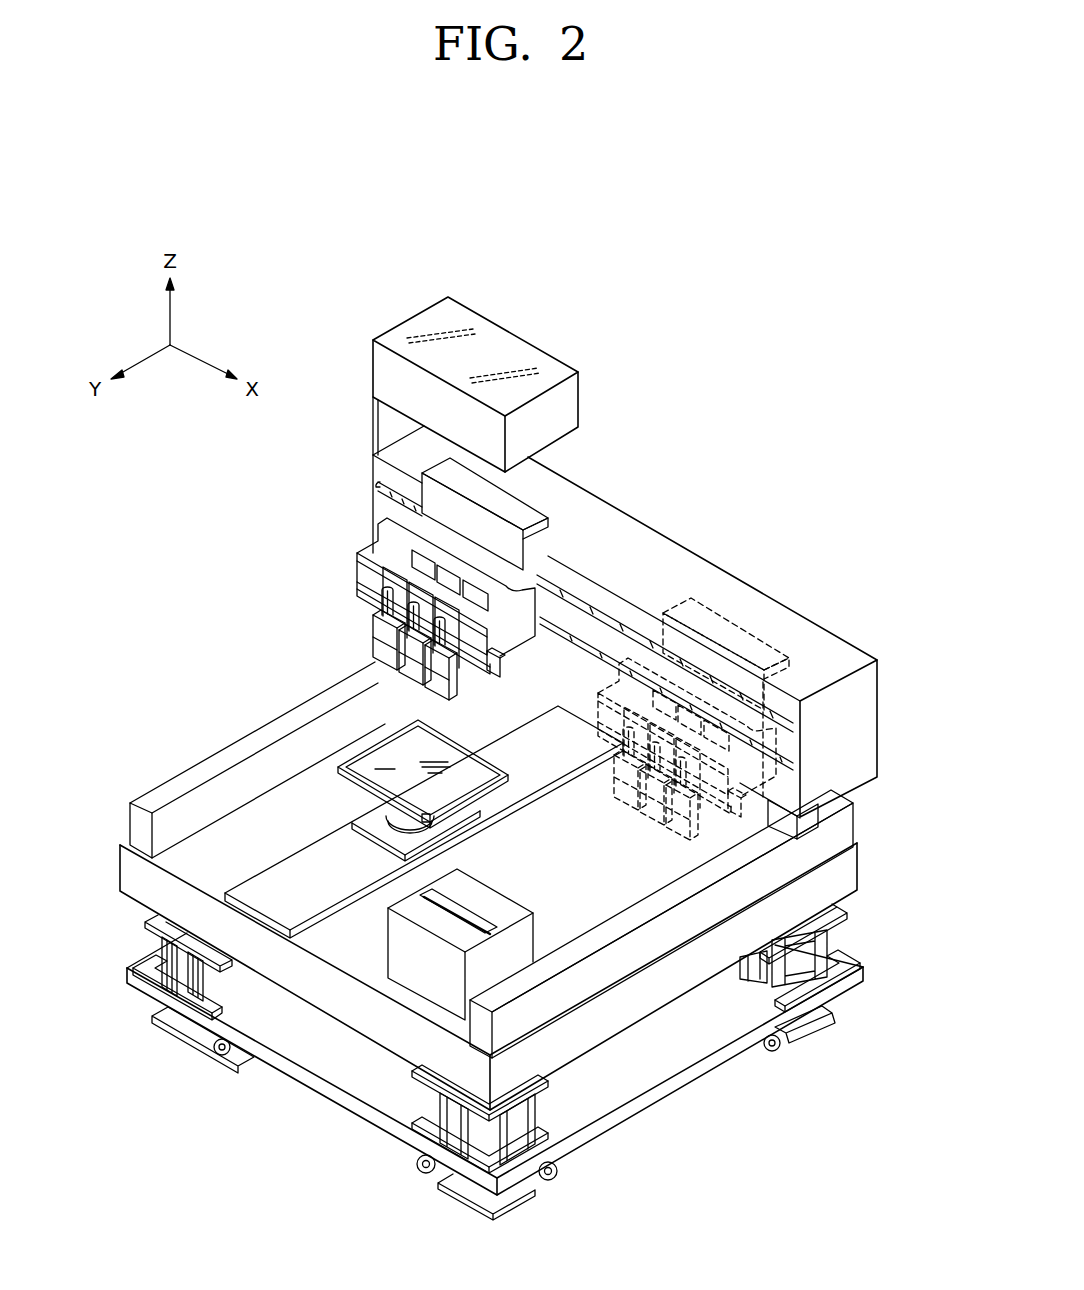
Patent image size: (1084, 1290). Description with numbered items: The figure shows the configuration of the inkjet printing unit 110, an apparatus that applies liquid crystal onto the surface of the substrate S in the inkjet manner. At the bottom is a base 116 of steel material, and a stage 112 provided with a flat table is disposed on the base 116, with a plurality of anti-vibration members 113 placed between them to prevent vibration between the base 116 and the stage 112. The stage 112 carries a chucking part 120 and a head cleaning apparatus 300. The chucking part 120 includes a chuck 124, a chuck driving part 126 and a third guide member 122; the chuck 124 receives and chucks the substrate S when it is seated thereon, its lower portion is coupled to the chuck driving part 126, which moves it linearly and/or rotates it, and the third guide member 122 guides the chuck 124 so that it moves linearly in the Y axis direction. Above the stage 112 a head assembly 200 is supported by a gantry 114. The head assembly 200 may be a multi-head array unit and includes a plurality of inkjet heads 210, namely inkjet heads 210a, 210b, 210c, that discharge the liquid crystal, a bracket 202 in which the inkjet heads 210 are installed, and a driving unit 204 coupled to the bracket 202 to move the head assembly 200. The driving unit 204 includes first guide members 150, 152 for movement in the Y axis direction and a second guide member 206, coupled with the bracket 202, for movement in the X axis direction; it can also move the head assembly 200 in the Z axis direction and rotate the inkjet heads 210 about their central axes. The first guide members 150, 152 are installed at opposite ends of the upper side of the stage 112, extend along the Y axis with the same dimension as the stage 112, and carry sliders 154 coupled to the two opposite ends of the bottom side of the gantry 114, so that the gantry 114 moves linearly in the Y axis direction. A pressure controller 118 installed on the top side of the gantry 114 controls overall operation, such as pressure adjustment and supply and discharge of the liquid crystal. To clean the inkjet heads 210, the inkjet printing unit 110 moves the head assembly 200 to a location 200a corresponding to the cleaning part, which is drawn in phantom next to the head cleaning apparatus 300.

The inkjet printing unit 110 is at (774, 343).
The stage 112 is at (847, 878).
The anti-vibration member 113 is at (841, 933).
The gantry 114 is at (862, 722).
The base 116 is at (857, 978).
The pressure controller 118 is at (503, 345).
The chucking part 120 is at (283, 841).
The third guide member 122 is at (640, 628).
The chuck 124 is at (353, 754).
The chuck driving part 126 is at (363, 817).
The first guide member 150 is at (137, 824).
The first guide member 152 is at (842, 835).
The slider 154 is at (829, 811).
The head assembly 200 is at (476, 575).
The location corresponding to the cleaning part 200a is at (713, 710).
The bracket 202 is at (376, 525).
The driving unit 204 is at (441, 497).
The second guide member 206 is at (503, 664).
The inkjet heads 210 is at (422, 575).
The inkjet head 210a is at (384, 647).
The inkjet head 210b is at (408, 662).
The inkjet head 210c is at (362, 648).
The head cleaning apparatus 300 is at (402, 984).
The substrate S is at (375, 745).